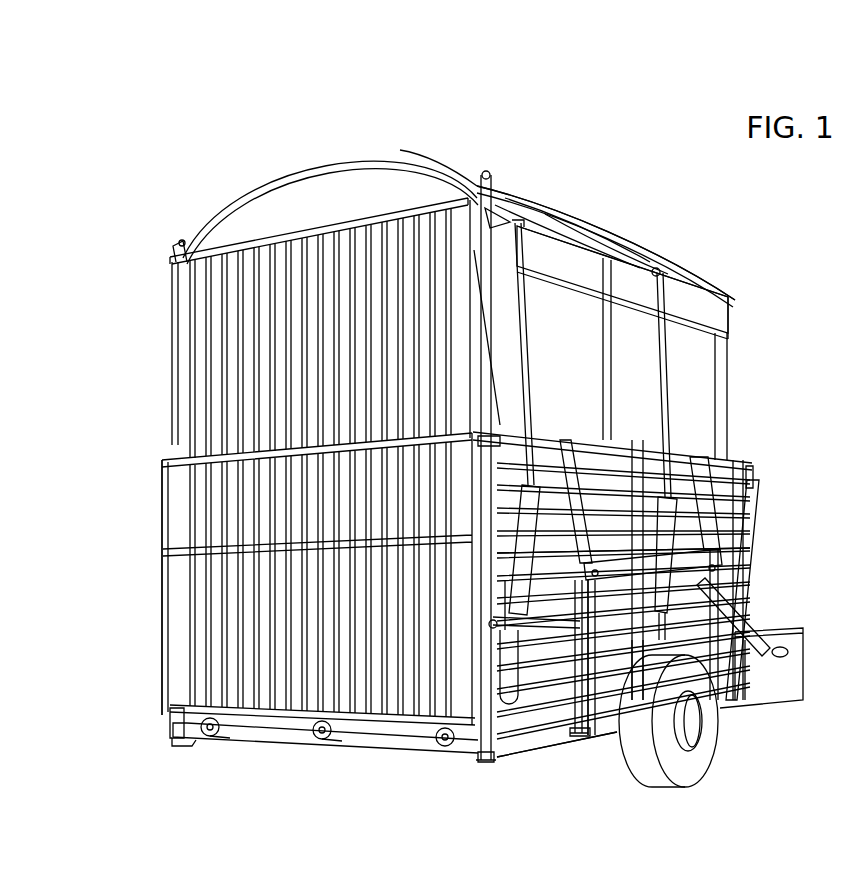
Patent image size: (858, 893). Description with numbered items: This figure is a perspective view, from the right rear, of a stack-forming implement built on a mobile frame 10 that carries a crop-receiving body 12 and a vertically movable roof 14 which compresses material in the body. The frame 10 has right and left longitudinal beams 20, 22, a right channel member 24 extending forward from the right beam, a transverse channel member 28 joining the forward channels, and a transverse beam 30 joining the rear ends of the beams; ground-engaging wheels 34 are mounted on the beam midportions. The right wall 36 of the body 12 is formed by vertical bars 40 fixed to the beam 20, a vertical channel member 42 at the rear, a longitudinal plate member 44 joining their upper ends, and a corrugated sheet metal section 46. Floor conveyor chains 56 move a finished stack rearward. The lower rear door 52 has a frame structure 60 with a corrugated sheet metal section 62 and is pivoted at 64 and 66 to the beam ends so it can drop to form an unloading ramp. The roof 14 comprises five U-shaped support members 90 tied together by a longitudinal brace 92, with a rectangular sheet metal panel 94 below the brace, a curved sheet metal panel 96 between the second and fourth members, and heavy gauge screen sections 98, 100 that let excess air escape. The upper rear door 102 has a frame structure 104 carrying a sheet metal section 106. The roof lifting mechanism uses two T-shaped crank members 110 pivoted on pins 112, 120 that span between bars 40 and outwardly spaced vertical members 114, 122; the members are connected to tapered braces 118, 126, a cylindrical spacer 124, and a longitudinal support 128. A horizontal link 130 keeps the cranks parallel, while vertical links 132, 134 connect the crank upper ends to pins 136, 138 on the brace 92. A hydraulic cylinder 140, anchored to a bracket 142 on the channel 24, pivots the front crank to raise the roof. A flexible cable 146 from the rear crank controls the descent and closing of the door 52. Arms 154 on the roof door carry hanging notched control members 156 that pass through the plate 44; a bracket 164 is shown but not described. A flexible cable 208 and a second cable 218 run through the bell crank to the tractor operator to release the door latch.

The mobile frame 10 is at (540, 758).
The crop-receiving container or body 12 is at (92, 604).
The top or roof 14 is at (632, 212).
The longitudinal beam 20 is at (522, 745).
The longitudinal beam 22 is at (178, 735).
The right channel member 24 is at (790, 680).
The transverse channel member 28 is at (760, 627).
The transverse beam 30 is at (265, 735).
The ground-engaging wheels 34 is at (712, 727).
The right wall 36 is at (540, 706).
The vertical bars 40 is at (697, 630).
The vertical channel member 42 is at (493, 476).
The longitudinal plate member 44 is at (594, 440).
The corrugated sheet metal section 46 is at (622, 462).
The rear door 52 is at (172, 650).
The chains 56 is at (214, 735).
The frame structure 60 is at (163, 500).
The corrugated sheet metal section 62 is at (190, 487).
The pivot 64 is at (482, 758).
The pivot 66 is at (170, 720).
The U-shaped support members 90 is at (310, 170).
The longitudinal brace 92 is at (697, 316).
The rectangular sheet metal panel 94 is at (707, 374).
The curved sheet metal panel 96 is at (596, 243).
The screen section 98 is at (659, 263).
The screen section 100 is at (445, 180).
The rear door 102 is at (205, 352).
The frame structure 104 is at (173, 377).
The sheet metal section 106 is at (297, 258).
The T-shaped crank member 110 is at (660, 525).
The pin 112 is at (713, 563).
The vertical member 114 is at (717, 593).
The tapered brace 118 is at (703, 508).
The pin 120 is at (598, 573).
The vertical member 122 is at (595, 705).
The cylindrical spacer 124 is at (572, 730).
The tapered brace 126 is at (580, 440).
The support 128 is at (703, 550).
The horizontal link 130 is at (632, 640).
The vertical link 132 is at (665, 302).
The vertical link 134 is at (520, 266).
The pin 136 is at (655, 273).
The pin 138 is at (515, 230).
The hydraulic cylinder 140 is at (745, 650).
The bracket 142 is at (787, 650).
The flexible cable 146 is at (520, 690).
The arm 154 is at (178, 258).
The control member 156 is at (487, 322).
The corner bracket 164 is at (492, 398).
The flexible cable 208 is at (570, 503).
The second cable 218 is at (757, 514).